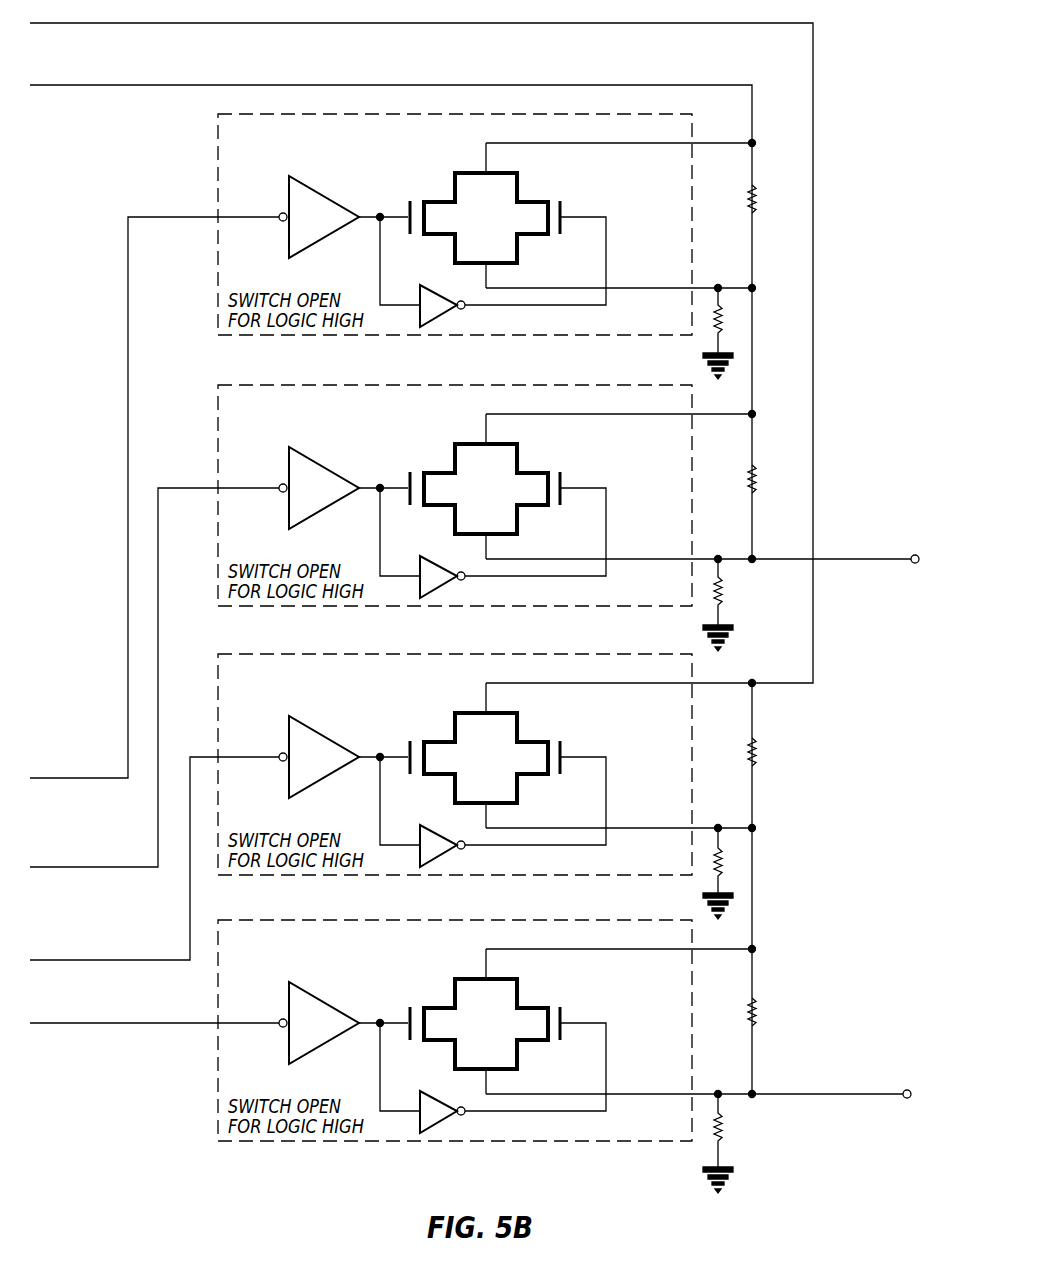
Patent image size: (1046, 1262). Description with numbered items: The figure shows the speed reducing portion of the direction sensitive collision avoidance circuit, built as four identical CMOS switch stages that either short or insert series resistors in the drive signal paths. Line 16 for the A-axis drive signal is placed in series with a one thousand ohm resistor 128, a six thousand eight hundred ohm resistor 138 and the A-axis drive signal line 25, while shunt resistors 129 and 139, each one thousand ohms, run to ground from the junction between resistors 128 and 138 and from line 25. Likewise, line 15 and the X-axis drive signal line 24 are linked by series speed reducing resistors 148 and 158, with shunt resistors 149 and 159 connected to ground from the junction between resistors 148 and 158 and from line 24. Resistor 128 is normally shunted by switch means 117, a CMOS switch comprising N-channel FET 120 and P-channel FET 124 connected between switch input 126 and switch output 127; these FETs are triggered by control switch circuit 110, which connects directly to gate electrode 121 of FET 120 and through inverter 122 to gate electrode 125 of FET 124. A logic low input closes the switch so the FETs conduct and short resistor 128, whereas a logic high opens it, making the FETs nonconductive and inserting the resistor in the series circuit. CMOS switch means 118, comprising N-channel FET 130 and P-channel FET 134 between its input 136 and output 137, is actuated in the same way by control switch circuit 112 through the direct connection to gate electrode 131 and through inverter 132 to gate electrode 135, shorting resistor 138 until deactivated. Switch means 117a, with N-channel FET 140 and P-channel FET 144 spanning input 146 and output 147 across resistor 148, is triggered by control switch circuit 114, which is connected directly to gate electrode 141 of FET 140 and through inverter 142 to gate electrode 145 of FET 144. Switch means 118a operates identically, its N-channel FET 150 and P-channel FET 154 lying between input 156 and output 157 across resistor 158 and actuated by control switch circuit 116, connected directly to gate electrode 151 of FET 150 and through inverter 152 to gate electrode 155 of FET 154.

The line for the X-axis drive signal 15 is at (160, 23).
The line for the A-axis drive signal 16 is at (160, 85).
The X-axis drive signal line 24 is at (866, 1094).
The A-axis drive signal line 25 is at (800, 559).
The control switch circuit 110 is at (312, 190).
The control switch circuit 112 is at (320, 462).
The control switch circuit 114 is at (318, 731).
The control switch circuit 116 is at (317, 996).
The switch means 117 is at (460, 155).
The CMOS switch means 118 is at (456, 428).
The switch means 117a is at (466, 697).
The switch means 118a is at (462, 962).
The N-channel FET 120 is at (418, 200).
The gate electrode 121 is at (404, 234).
The inverter 122 is at (445, 312).
The P-channel FET 124 is at (555, 200).
The gate electrode 125 is at (562, 224).
The switch input terminal 126 is at (603, 143).
The switch output terminal 127 is at (655, 296).
The resistor 128 is at (757, 200).
The shunt resistor 129 is at (730, 318).
The N-channel FET 130 is at (418, 471).
The gate electrode 131 is at (404, 505).
The inverter 132 is at (445, 583).
The P-channel FET 134 is at (555, 471).
The gate electrode 135 is at (562, 495).
The switch input terminal 136 is at (639, 416).
The switch output terminal 137 is at (638, 563).
The resistor 138 is at (757, 480).
The shunt resistor 139 is at (727, 592).
The N-channel FET 140 is at (416, 740).
The gate electrode 141 is at (404, 774).
The inverter 142 is at (443, 852).
The P-channel FET 144 is at (553, 740).
The gate electrode 145 is at (563, 765).
The switch input terminal 146 is at (583, 683).
The switch output terminal 147 is at (628, 832).
The speed reducing resistor 148 is at (757, 752).
The shunt resistor 149 is at (727, 860).
The N-channel FET 150 is at (418, 1006).
The gate electrode 151 is at (405, 1040).
The inverter 152 is at (445, 1120).
The P-channel FET 154 is at (555, 1006).
The gate electrode 155 is at (562, 1030).
The switch input terminal 156 is at (590, 949).
The switch output terminal 157 is at (634, 1098).
The speed reducing resistor 158 is at (757, 1012).
The shunt resistor 159 is at (727, 1133).